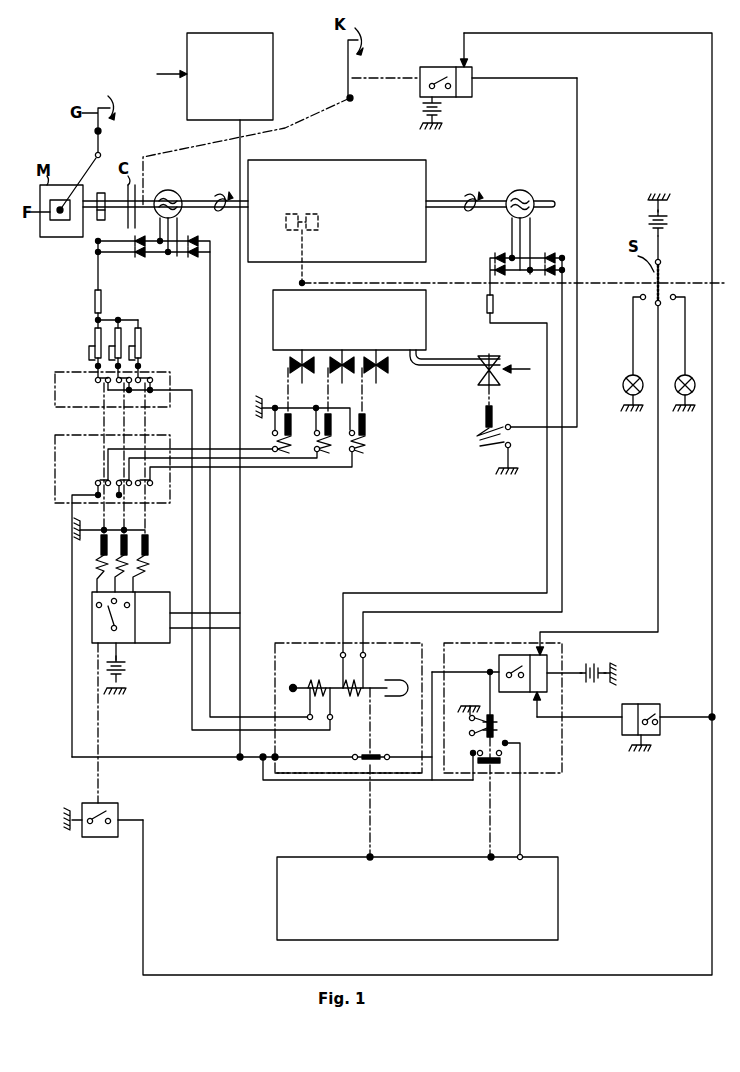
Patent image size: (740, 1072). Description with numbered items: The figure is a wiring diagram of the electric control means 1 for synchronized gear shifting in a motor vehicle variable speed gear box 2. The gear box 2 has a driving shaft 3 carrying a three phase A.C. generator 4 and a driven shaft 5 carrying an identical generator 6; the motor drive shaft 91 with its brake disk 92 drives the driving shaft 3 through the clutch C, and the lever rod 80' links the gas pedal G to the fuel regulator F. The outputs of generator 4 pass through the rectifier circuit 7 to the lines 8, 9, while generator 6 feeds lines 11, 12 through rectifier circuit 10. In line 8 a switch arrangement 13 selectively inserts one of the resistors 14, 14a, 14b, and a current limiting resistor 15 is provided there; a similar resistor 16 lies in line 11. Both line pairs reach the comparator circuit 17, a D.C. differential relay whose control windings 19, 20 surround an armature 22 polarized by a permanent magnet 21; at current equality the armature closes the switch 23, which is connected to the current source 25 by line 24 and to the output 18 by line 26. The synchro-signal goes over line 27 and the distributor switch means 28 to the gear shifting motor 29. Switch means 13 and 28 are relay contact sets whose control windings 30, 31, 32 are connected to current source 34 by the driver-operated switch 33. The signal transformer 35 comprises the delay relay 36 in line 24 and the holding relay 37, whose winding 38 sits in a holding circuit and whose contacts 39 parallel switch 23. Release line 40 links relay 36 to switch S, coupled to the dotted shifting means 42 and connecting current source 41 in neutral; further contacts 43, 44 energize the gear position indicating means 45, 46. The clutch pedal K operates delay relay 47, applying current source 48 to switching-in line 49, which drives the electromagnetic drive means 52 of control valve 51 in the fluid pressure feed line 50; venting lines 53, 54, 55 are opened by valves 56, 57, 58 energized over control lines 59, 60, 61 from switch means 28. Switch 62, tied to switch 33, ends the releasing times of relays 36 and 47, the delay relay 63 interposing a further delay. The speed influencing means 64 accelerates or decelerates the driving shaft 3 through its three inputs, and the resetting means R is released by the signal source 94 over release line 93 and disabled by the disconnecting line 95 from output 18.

The electric control means 1 is at (420, 531).
The variable speed gear box 2 is at (372, 162).
The driving shaft 3 is at (206, 198).
The three phase A.C. generator 4 is at (168, 190).
The driven shaft 5 is at (448, 202).
The three phase A.C. generator 6 is at (521, 190).
The three phase two-way rectifier circuit 7 is at (170, 256).
The line 8 is at (192, 430).
The line 9 is at (212, 440).
The three phase two-way rectifier circuit 10 is at (540, 256).
The line 11 is at (547, 498).
The line 12 is at (562, 498).
The switch arrangement 13 is at (170, 372).
The resistor 14 is at (94, 334).
The resistor 14a is at (122, 320).
The resistor 14b is at (143, 332).
The current limiting resistor 15 is at (94, 300).
The current limiting resistor 16 is at (487, 303).
The comparator circuit 17 is at (282, 650).
The output 18 is at (276, 782).
The control winding 19 is at (313, 683).
The control winding 20 is at (358, 683).
The permanent magnet 21 is at (405, 682).
The relay armature 22 is at (335, 700).
The switch 23 is at (386, 755).
The line 24 is at (436, 660).
The current source 25 is at (598, 664).
The line 26 is at (320, 775).
The line 27 is at (92, 622).
The distributor switch means 28 is at (78, 488).
The gear shifting motor 29 is at (282, 350).
The control winding 30 is at (95, 562).
The control winding 31 is at (112, 568).
The control winding 32 is at (142, 566).
The switch 33 is at (92, 634).
The current source 34 is at (128, 672).
The signal transformer 35 is at (556, 775).
The delay relay 36 is at (516, 655).
The holding relay 37 is at (472, 770).
The control winding 38 is at (496, 712).
The contacts 39 is at (494, 766).
The release line 40 is at (658, 548).
The current source 41 is at (668, 234).
The shifting means 42 is at (300, 272).
The contact 43 is at (631, 297).
The contact 44 is at (686, 297).
The gear position indicating means 45 is at (623, 386).
The gear position indicating means 46 is at (695, 386).
The delay relay 47 is at (434, 69).
The current source 48 is at (444, 119).
The switching-in line 49 is at (578, 143).
The fluid pressure feed line 50 is at (440, 372).
The control valve 51 is at (495, 360).
The electromagnetic drive means 52 is at (486, 448).
The fluid pressure venting line 53 is at (298, 355).
The fluid pressure venting line 54 is at (338, 355).
The fluid pressure venting line 55 is at (366, 355).
The electromagnetically operated valve 56 is at (296, 455).
The electromagnetically operated valve 57 is at (333, 455).
The electromagnetically operated valve 58 is at (368, 455).
The control line 59 is at (262, 452).
The control line 60 is at (282, 460).
The control line 61 is at (300, 468).
The switch 62 is at (101, 838).
The delay relay 63 is at (644, 704).
The speed influencing means 64 is at (277, 890).
The lever rod 80' is at (80, 176).
The drive shaft 91 is at (108, 196).
The brake disk 92 is at (108, 220).
The release line 93 is at (242, 557).
The signal source 94 is at (187, 107).
The disconnecting line 95 is at (242, 664).